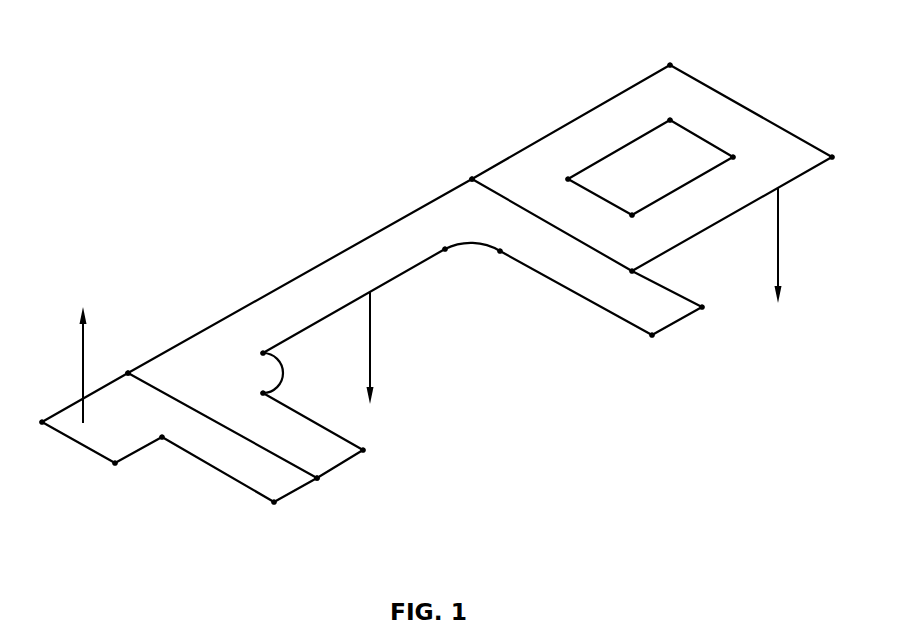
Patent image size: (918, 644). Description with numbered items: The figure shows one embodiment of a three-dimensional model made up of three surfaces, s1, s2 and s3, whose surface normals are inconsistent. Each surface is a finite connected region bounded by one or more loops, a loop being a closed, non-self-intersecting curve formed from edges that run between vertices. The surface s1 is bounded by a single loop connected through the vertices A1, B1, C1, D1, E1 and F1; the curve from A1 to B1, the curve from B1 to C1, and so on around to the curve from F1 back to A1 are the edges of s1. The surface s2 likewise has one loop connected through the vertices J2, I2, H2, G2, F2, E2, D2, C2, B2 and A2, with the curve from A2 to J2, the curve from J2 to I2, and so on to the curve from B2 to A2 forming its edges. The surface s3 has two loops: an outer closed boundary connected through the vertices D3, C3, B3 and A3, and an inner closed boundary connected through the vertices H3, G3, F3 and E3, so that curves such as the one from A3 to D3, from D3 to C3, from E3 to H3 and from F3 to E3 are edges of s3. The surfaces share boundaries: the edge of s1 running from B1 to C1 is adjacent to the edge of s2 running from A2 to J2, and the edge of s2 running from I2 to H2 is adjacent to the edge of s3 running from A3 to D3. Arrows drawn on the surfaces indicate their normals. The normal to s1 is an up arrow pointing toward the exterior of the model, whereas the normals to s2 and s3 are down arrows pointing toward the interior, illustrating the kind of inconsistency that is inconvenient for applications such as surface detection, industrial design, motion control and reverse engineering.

The vertex D1 is at (28, 424).
The vertex E1 is at (120, 477).
The vertex F1 is at (161, 454).
The vertex A1 is at (279, 517).
The vertex B1 is at (320, 495).
The vertex C1 is at (112, 361).
The surface s1 is at (97, 372).
The vertex A2 is at (338, 482).
The vertex B2 is at (381, 452).
The vertex C2 is at (283, 394).
The vertex D2 is at (282, 359).
The vertex E2 is at (442, 265).
The vertex F2 is at (489, 266).
The vertex G2 is at (658, 350).
The vertex H2 is at (716, 320).
The vertex I2 is at (447, 172).
The vertex J2 is at (134, 353).
The surface s2 is at (356, 336).
The vertex A3 is at (657, 272).
The vertex B3 is at (851, 155).
The vertex C3 is at (672, 51).
The vertex D3 is at (466, 164).
The vertex E3 is at (629, 229).
The vertex F3 is at (709, 159).
The vertex G3 is at (668, 108).
The vertex H3 is at (549, 179).
The surface s3 is at (762, 234).